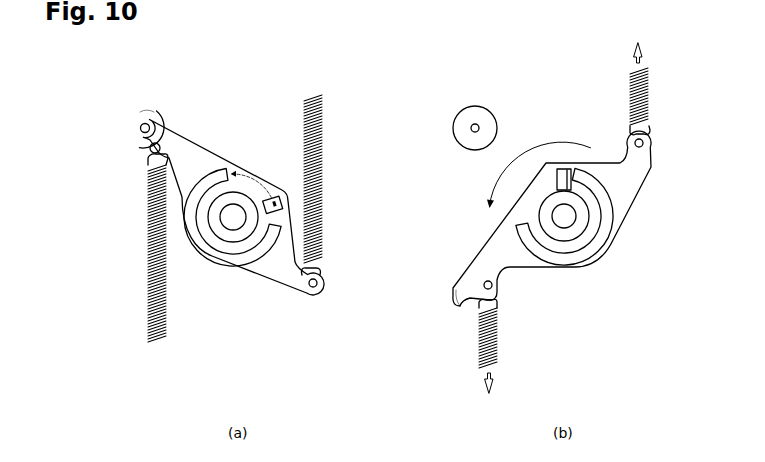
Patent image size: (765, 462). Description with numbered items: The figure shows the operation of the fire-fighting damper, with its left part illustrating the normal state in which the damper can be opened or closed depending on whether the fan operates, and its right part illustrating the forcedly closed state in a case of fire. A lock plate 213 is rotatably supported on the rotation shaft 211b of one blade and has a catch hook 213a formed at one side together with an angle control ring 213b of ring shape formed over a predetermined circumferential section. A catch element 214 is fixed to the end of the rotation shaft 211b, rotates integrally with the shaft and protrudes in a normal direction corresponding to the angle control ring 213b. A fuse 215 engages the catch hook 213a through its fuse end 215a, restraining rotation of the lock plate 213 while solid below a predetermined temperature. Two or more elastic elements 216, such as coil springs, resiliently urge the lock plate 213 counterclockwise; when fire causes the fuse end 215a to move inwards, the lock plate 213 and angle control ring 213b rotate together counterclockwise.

The rotation shaft 211b is at (562, 222).
The lock plate 213 is at (208, 150).
The catch hook 213a is at (455, 350).
The angle control ring 213b is at (594, 245).
The catch element 214 is at (272, 198).
The fuse 215 is at (140, 138).
The fuse end 215a is at (474, 130).
The elastic element 216 is at (153, 300).